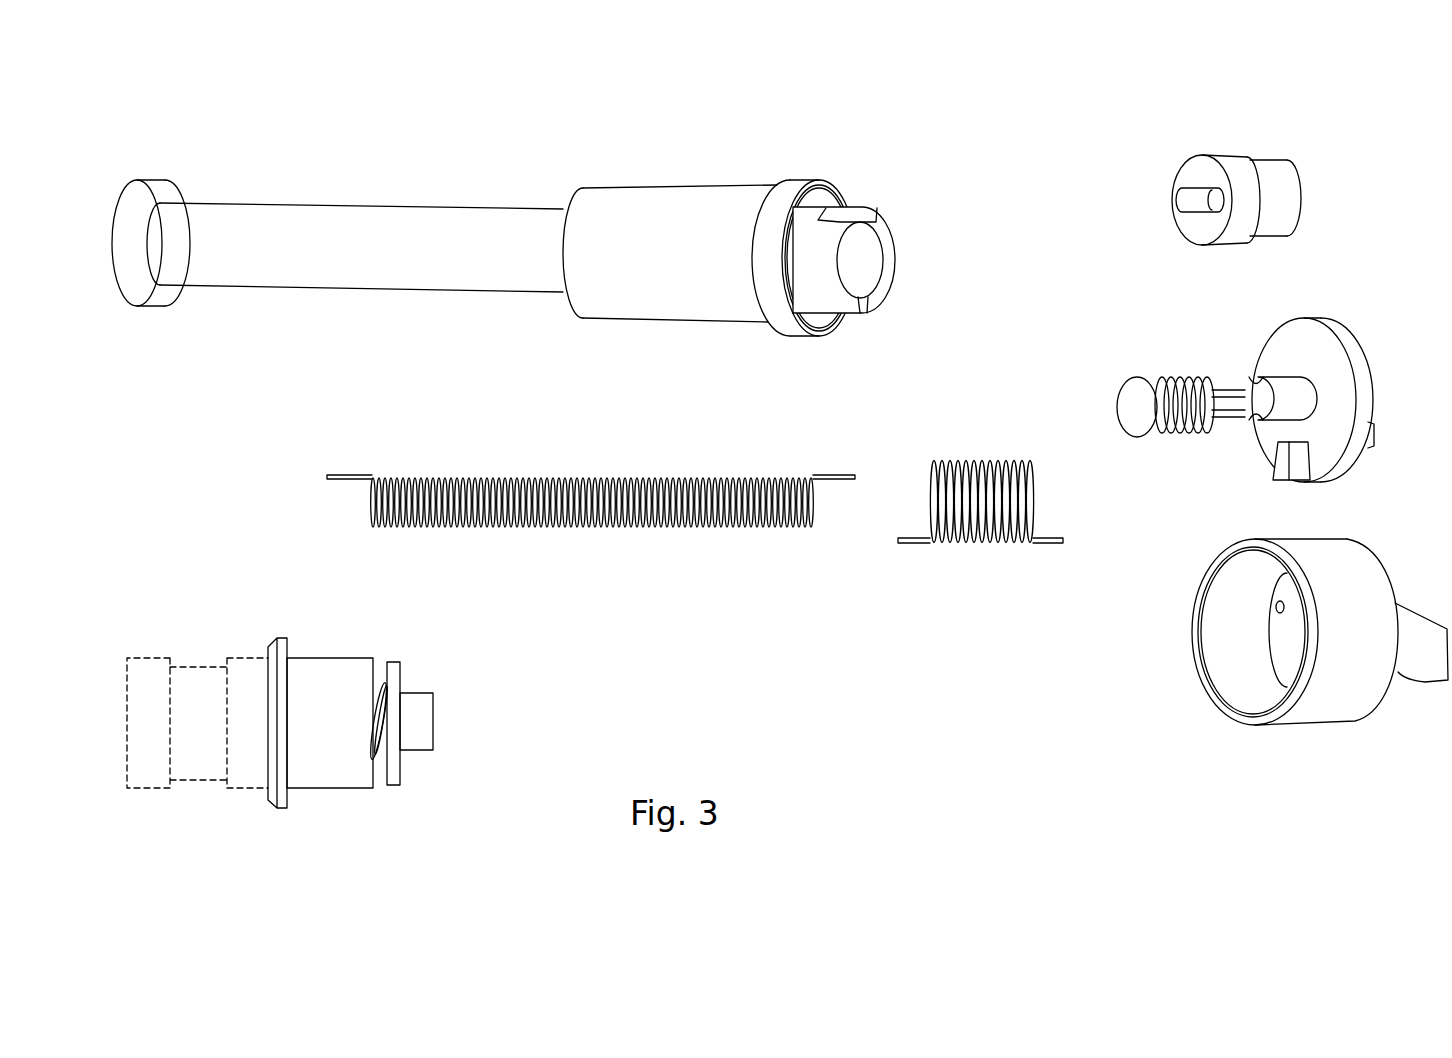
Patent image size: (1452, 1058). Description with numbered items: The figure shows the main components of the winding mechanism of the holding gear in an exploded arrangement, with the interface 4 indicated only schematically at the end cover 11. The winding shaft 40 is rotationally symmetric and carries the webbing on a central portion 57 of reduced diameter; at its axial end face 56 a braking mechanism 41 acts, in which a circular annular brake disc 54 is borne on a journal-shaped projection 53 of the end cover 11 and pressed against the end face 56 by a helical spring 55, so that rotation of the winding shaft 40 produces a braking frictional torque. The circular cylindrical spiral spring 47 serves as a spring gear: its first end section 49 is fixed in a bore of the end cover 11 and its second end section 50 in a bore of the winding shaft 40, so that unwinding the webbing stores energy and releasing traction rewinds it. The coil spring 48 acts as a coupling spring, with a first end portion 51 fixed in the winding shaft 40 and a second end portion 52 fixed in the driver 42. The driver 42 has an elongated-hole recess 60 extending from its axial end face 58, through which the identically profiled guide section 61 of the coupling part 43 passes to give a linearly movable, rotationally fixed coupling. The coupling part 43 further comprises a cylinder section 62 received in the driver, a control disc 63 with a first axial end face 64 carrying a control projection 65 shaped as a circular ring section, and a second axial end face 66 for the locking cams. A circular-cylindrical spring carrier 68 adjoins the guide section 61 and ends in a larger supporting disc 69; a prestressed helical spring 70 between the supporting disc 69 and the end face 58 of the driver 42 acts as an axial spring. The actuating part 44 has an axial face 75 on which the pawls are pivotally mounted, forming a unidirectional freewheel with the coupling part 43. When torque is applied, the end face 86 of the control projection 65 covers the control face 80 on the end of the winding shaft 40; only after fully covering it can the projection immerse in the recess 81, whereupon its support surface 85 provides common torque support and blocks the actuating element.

The interface 4 is at (193, 655).
The end cover 11 is at (320, 770).
The winding shaft 40 is at (608, 208).
The braking mechanism 41 is at (383, 745).
The driver 42 is at (1206, 165).
The coupling part 43 is at (1257, 393).
The actuating part 44 is at (1309, 649).
The spiral spring 47 is at (590, 470).
The coil spring 48 is at (983, 477).
The first end section 49 is at (350, 477).
The second end section 50 is at (837, 477).
The first end portion 51 is at (910, 538).
The second end portion 52 is at (1050, 538).
The projection 53 is at (427, 727).
The brake disc 54 is at (397, 673).
The helical spring 55 is at (375, 763).
The axial end face 56 is at (125, 198).
The central portion 57 is at (513, 223).
The axial end face 58 is at (1192, 167).
The recess 60 is at (1193, 198).
The guide section 61 is at (1240, 407).
The cylinder section 62 is at (1287, 393).
The control disc 63 is at (1347, 343).
The first axial end face 64 is at (1317, 348).
The control projection 65 is at (1303, 468).
The second axial end face 66 is at (1369, 375).
The spring carrier 68 is at (1173, 392).
The supporting disc 69 is at (1133, 415).
The helical spring 70 is at (1178, 428).
The axial face 75 is at (1288, 663).
The control face 80 is at (842, 232).
The recess 81 is at (842, 196).
The support surface 85 is at (1273, 455).
The end face 86 is at (1282, 467).